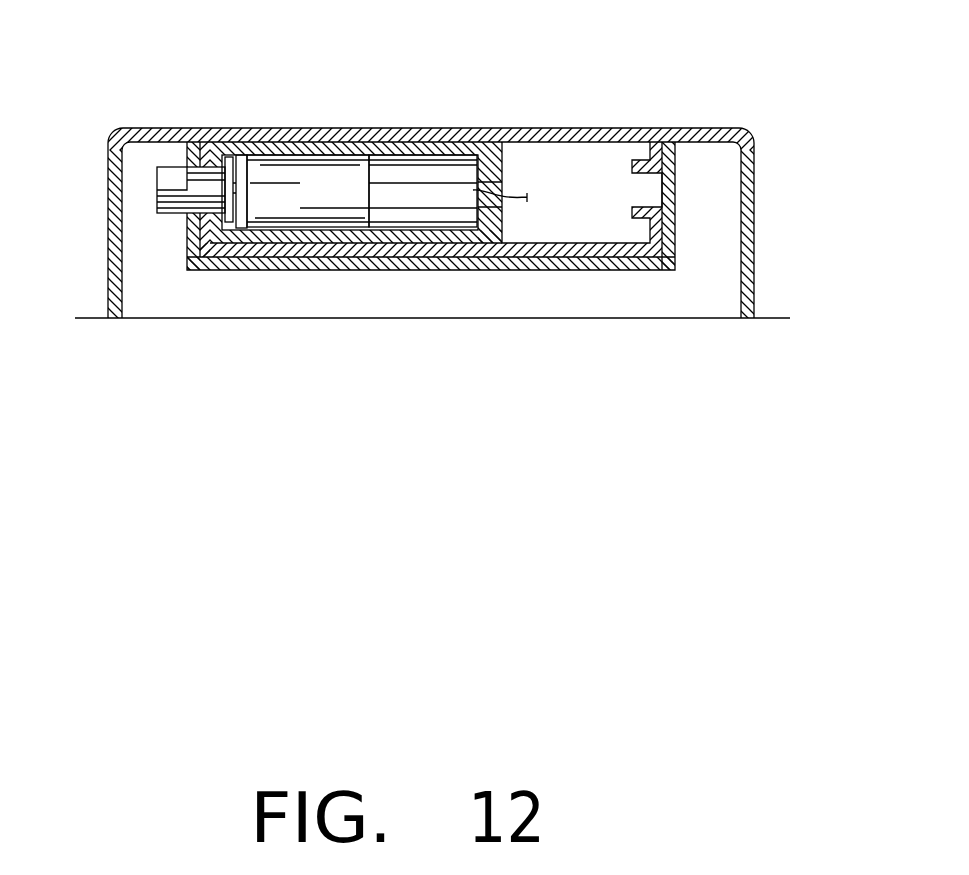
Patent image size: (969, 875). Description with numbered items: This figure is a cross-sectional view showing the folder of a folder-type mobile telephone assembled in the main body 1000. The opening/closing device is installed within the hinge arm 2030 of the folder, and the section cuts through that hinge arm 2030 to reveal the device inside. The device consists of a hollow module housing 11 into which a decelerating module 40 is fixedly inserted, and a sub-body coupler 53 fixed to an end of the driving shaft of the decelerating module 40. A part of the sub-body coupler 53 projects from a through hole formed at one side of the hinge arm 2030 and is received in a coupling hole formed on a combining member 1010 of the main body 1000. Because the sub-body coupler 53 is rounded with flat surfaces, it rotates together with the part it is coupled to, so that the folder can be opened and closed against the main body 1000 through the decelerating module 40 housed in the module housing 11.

The main body 1000 is at (762, 235).
The combining member 1010 is at (162, 133).
The hinge arm 2030 is at (613, 126).
The sub-body coupler 53 is at (157, 202).
The decelerating module 40 is at (311, 152).
The module housing 11 is at (428, 155).